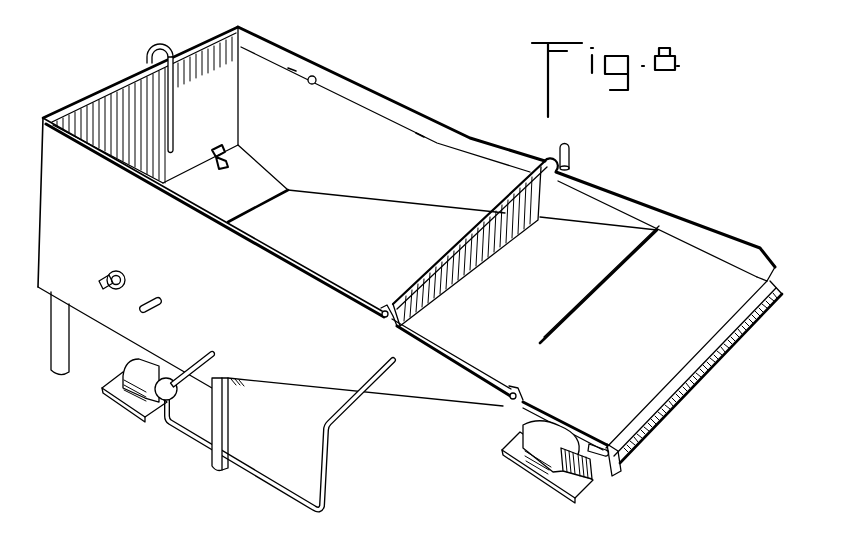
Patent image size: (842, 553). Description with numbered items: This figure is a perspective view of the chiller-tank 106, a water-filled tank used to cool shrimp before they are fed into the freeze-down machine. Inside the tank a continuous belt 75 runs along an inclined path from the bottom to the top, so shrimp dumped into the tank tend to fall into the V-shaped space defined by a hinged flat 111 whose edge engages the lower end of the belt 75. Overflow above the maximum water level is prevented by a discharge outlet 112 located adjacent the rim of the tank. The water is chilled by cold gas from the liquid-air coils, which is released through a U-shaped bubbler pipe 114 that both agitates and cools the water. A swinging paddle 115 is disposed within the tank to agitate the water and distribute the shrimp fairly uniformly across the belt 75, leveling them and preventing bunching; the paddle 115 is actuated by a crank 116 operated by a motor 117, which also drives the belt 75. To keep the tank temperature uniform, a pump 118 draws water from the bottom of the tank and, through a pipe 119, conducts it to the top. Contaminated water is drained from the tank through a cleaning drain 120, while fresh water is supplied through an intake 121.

The continuous belt 75 is at (683, 258).
The chiller-tank 106 is at (420, 115).
The hinged flat 111 is at (260, 172).
The discharge outlet 112 is at (315, 77).
The U-shaped bubbler pipe 114 is at (174, 102).
The swinging paddle 115 is at (523, 220).
The crank 116 is at (570, 153).
The motor 117 is at (542, 438).
The pump 118 is at (138, 367).
The pipe 119 is at (213, 354).
The cleaning drain 120 is at (228, 428).
The intake 121 is at (162, 306).